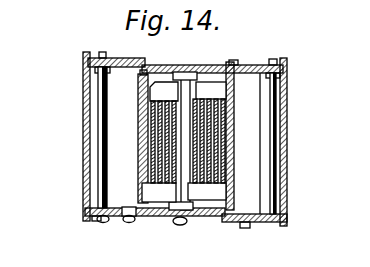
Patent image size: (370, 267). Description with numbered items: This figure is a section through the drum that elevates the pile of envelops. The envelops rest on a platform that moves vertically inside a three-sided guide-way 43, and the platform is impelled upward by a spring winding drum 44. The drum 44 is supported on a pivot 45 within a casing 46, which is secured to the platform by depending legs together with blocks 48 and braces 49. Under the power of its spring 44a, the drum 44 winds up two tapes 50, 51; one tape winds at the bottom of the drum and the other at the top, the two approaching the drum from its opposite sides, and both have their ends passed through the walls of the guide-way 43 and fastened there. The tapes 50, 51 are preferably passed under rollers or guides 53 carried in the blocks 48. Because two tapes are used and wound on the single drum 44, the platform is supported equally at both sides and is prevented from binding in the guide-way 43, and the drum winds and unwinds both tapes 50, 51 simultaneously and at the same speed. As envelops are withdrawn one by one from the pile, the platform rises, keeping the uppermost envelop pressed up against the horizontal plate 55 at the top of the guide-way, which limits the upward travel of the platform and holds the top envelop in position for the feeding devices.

The three-sided guide-way 43 is at (86, 222).
The spring winding drum 44 is at (132, 218).
The spring 44a is at (197, 96).
The pivot 45 is at (187, 72).
The casing 46 is at (224, 73).
The blocks 48 is at (84, 212).
The braces 49 is at (110, 58).
The tape 50 is at (107, 160).
The tape 51 is at (139, 92).
The rollers or guides 53 is at (109, 130).
The plate 55 is at (261, 140).